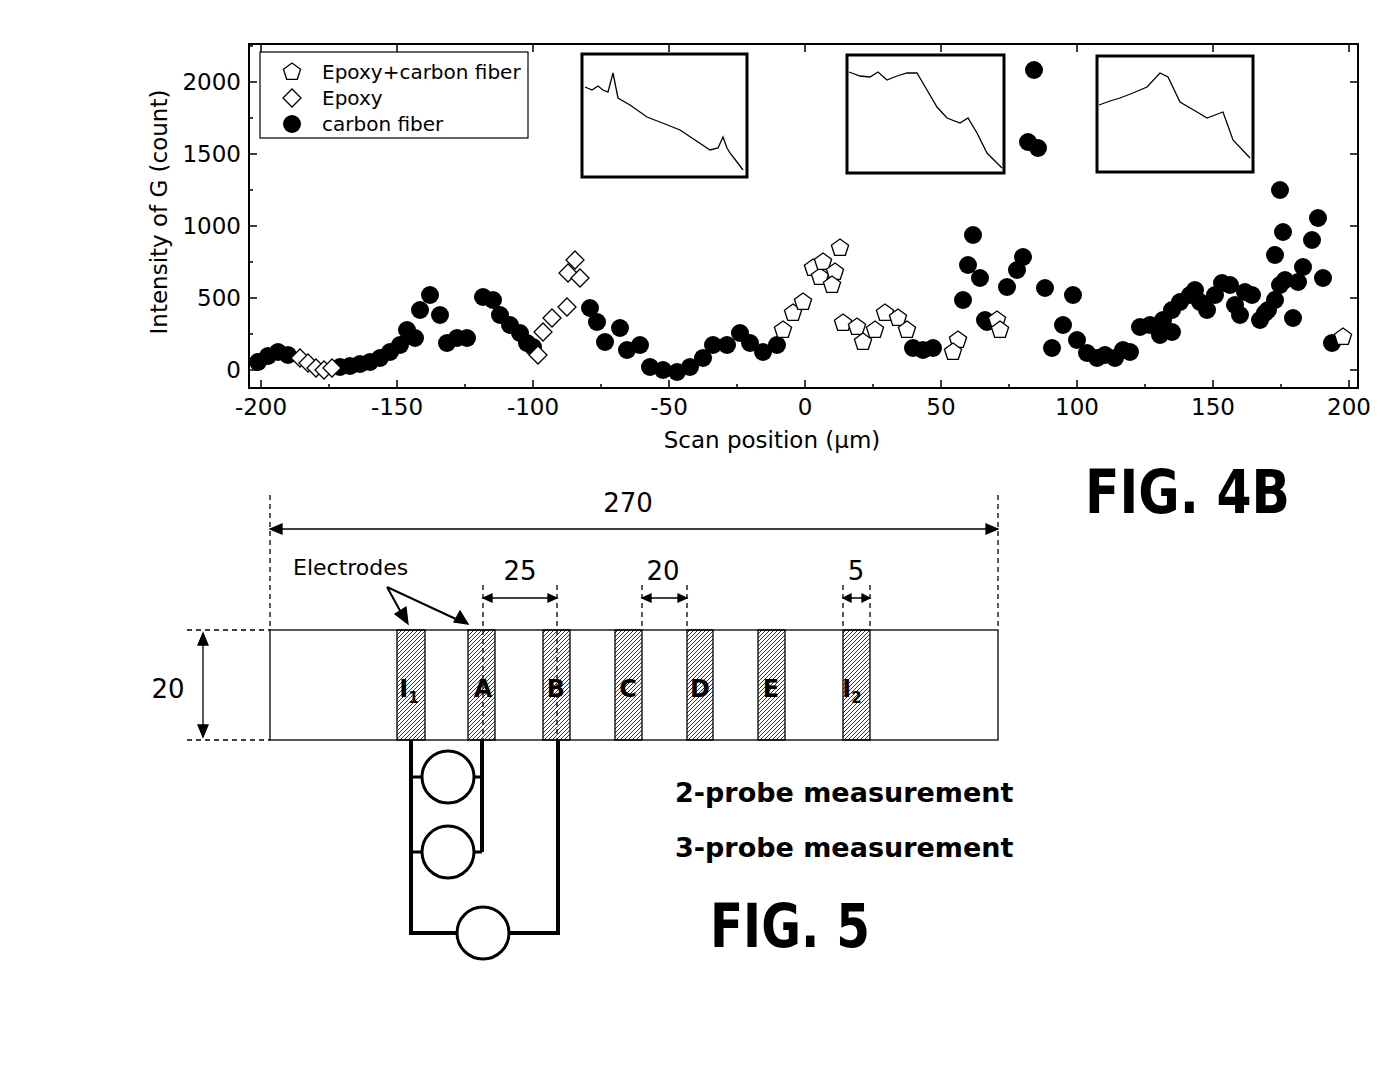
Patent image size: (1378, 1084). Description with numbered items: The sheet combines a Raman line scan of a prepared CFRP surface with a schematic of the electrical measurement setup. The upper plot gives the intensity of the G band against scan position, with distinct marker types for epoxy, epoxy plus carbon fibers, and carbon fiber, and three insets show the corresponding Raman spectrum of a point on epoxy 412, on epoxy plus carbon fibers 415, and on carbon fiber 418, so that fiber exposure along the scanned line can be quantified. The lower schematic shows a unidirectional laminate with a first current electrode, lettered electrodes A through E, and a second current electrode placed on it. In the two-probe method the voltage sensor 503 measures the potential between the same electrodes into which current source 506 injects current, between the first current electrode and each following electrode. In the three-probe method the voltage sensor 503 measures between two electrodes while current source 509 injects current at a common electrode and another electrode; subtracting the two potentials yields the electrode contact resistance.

In FIG. 4B, the epoxy Raman spectrum 412 is at (589, 232).
In FIG. 4B, the epoxy+carbon fibers Raman spectrum 415 is at (841, 234).
In FIG. 4B, the carbon fiber Raman spectrum 418 is at (1035, 248).
In FIG. 5, the voltage sensor 503 is at (404, 787).
In FIG. 5, the current source 506 is at (404, 860).
In FIG. 5, the current source 509 is at (568, 930).